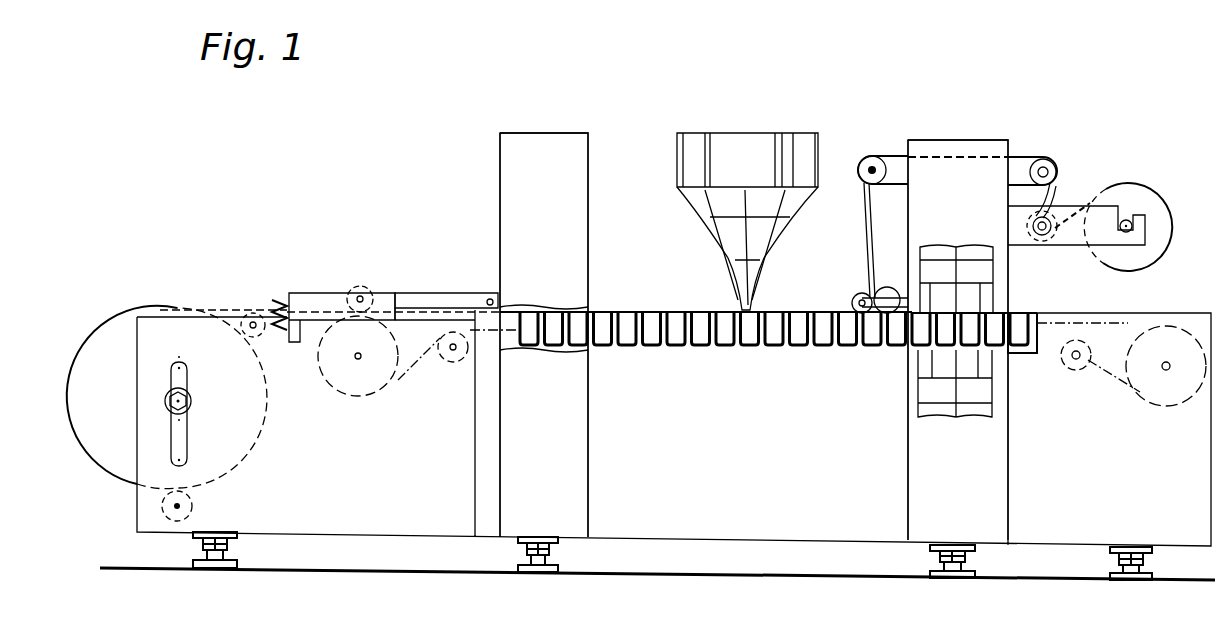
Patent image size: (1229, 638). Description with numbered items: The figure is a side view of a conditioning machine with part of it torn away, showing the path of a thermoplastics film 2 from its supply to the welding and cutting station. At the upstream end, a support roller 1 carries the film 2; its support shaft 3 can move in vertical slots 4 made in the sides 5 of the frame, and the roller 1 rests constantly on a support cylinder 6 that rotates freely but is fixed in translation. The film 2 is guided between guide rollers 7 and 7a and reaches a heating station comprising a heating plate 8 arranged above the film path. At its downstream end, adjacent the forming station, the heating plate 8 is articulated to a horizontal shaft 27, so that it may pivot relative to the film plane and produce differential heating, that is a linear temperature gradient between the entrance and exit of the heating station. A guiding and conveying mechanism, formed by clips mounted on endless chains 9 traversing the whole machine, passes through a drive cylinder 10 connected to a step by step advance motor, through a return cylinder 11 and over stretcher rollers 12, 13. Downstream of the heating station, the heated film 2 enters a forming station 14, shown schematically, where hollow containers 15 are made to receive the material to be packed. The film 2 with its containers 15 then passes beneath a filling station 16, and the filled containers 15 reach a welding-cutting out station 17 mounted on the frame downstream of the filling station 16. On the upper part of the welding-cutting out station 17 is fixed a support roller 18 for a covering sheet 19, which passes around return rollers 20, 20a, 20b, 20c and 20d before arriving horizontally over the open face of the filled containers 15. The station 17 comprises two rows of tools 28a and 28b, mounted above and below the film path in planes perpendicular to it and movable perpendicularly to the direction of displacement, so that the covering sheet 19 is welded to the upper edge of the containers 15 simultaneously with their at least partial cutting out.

The support roller 1 is at (183, 315).
The thermoplastics film 2 is at (238, 312).
The support shaft 3 is at (192, 401).
The vertical slots 4 is at (187, 441).
The sides of the frame 5 is at (674, 356).
The support cylinder 6 is at (193, 507).
The guide roller 7 is at (263, 338).
The guide roller 7a is at (362, 292).
The heating plate 8 is at (397, 292).
The endless chains 9 is at (420, 362).
The drive cylinder 10 is at (1163, 400).
The return cylinder 11 is at (357, 382).
The stretcher roller 12 is at (1066, 368).
The stretcher roller 13 is at (452, 363).
The forming station 14 is at (553, 140).
The hollow containers 15 is at (668, 348).
The filling station 16 is at (745, 148).
The welding-cutting out station 17 is at (959, 142).
The support roller 18 is at (1150, 200).
The covering sheet 19 is at (862, 247).
The return roller 20 is at (1048, 240).
The return roller 20a is at (1052, 162).
The return roller 20b is at (872, 158).
The return roller 20c is at (851, 304).
The return roller 20d is at (870, 275).
The horizontal shaft 27 is at (485, 300).
The row of tools 28a is at (925, 455).
The row of tools 28b is at (986, 455).